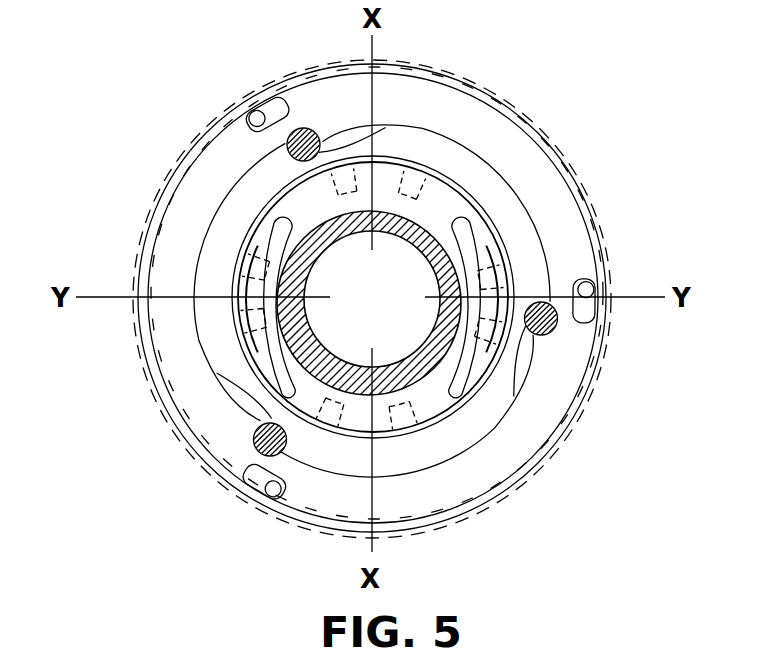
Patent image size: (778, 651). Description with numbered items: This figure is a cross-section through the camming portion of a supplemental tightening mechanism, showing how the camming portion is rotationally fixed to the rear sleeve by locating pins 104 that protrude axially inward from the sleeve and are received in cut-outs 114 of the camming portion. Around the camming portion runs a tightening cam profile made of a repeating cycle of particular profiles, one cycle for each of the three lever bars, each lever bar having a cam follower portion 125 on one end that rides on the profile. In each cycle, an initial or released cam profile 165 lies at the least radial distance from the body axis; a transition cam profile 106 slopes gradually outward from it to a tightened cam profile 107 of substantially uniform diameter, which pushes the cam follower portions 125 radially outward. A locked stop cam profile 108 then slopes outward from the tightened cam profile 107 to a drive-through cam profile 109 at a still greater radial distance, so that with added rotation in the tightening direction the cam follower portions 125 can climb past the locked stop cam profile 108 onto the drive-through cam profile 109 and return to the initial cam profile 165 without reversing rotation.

The locating pin 104 is at (275, 496).
The transition cam profile 106 is at (200, 446).
The tightened cam profile 107 is at (200, 347).
The locked stop cam profile 108 is at (468, 470).
The drive-through cam profile 109 is at (349, 478).
The cut-out 114 is at (236, 493).
The cam follower portion 125 is at (253, 447).
The initial cam profile 165 is at (394, 108).